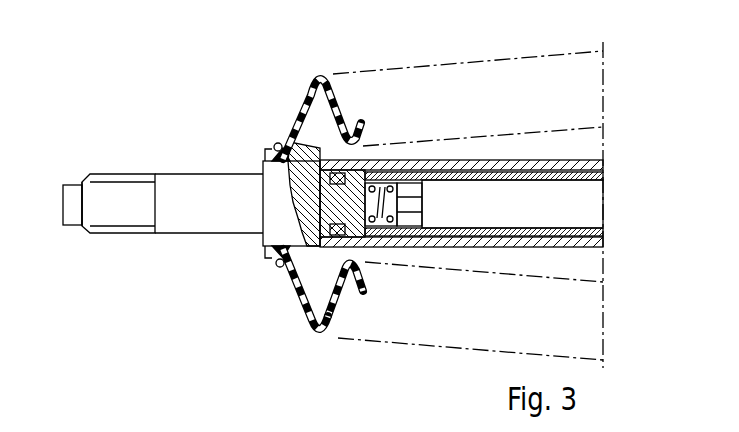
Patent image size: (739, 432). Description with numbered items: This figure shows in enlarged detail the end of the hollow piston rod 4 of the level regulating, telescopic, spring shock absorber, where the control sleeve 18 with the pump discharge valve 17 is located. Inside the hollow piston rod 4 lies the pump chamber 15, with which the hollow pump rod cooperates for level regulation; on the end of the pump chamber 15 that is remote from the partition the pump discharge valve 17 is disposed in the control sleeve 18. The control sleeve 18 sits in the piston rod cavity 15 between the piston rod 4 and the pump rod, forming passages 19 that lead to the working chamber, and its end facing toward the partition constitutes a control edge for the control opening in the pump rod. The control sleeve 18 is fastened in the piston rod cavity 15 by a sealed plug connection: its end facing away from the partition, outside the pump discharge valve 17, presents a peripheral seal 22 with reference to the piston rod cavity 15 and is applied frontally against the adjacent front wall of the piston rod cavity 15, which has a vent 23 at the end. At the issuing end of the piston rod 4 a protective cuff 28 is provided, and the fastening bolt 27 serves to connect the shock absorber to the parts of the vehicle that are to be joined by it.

The hollow piston rod 4 is at (530, 168).
The pump chamber 15 is at (540, 208).
The pump discharge valve 17 is at (378, 222).
The control sleeve 18 is at (418, 215).
The passages 19 is at (459, 175).
The peripheral seal 22 is at (340, 265).
The vent 23 is at (322, 145).
The fastening bolt 27 is at (113, 211).
The protective cuff 28 is at (308, 330).